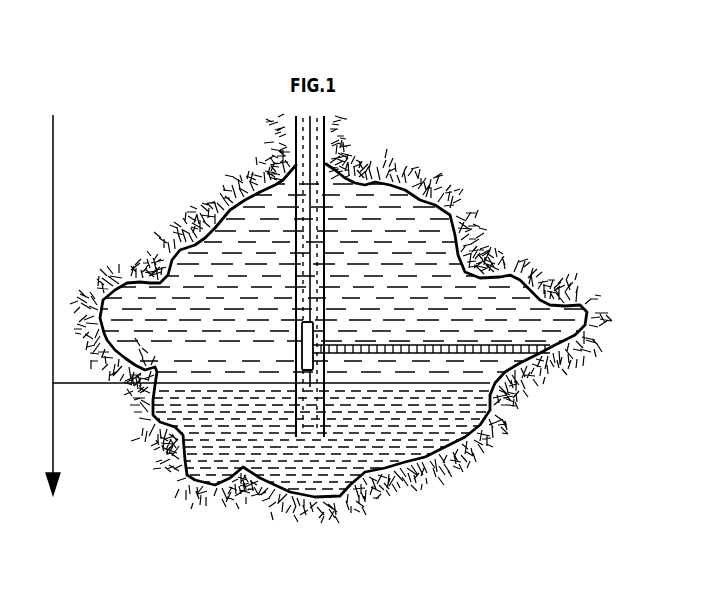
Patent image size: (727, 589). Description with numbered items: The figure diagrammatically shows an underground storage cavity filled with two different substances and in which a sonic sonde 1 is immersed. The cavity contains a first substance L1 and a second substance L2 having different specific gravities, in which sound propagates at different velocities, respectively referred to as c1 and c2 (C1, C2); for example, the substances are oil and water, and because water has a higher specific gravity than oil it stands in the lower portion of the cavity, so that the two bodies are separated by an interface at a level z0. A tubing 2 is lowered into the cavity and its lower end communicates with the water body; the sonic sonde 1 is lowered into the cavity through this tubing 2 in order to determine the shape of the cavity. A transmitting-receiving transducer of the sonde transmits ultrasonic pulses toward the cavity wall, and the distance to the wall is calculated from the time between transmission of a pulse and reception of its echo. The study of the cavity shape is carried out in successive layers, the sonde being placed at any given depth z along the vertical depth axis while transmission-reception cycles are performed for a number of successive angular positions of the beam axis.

The sonic sonde 1 is at (313, 350).
The tubing 2 is at (324, 374).
The first substance L1 is at (215, 243).
The second substance L2 is at (207, 469).
The sound velocity in first substance C1 is at (345, 278).
The sound velocity in second substance C2 is at (345, 440).
The interface level z0 is at (262, 378).
The depth z is at (46, 305).